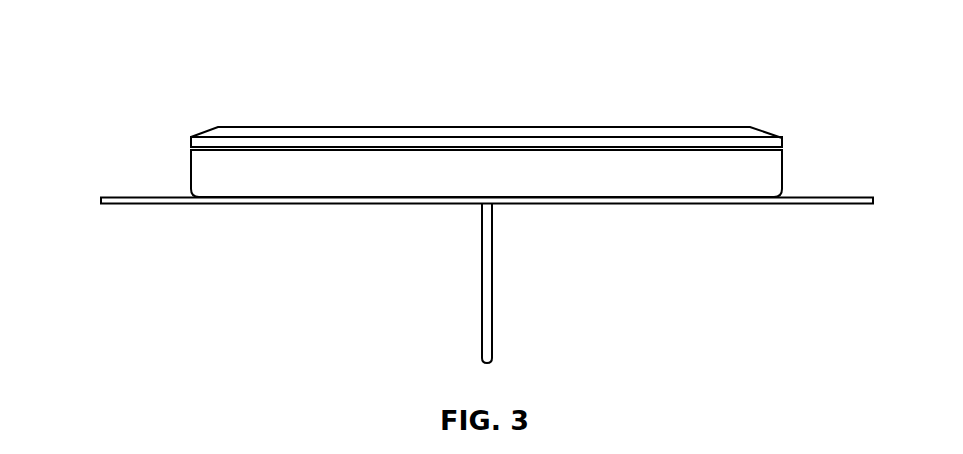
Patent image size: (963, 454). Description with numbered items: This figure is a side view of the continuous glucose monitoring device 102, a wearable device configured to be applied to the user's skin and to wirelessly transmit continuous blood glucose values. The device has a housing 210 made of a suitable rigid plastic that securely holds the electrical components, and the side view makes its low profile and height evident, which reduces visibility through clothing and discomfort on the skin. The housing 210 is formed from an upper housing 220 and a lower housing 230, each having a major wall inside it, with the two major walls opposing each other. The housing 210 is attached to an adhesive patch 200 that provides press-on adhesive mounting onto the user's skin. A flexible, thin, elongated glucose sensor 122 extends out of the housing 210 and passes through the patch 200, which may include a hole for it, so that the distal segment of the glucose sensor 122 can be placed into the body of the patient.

The continuous glucose monitoring device 102 is at (166, 58).
The adhesive patch 200 is at (100, 201).
The glucose sensor 122 is at (482, 281).
The housing 210 is at (801, 196).
The upper housing 220 is at (318, 127).
The lower housing 230 is at (643, 179).